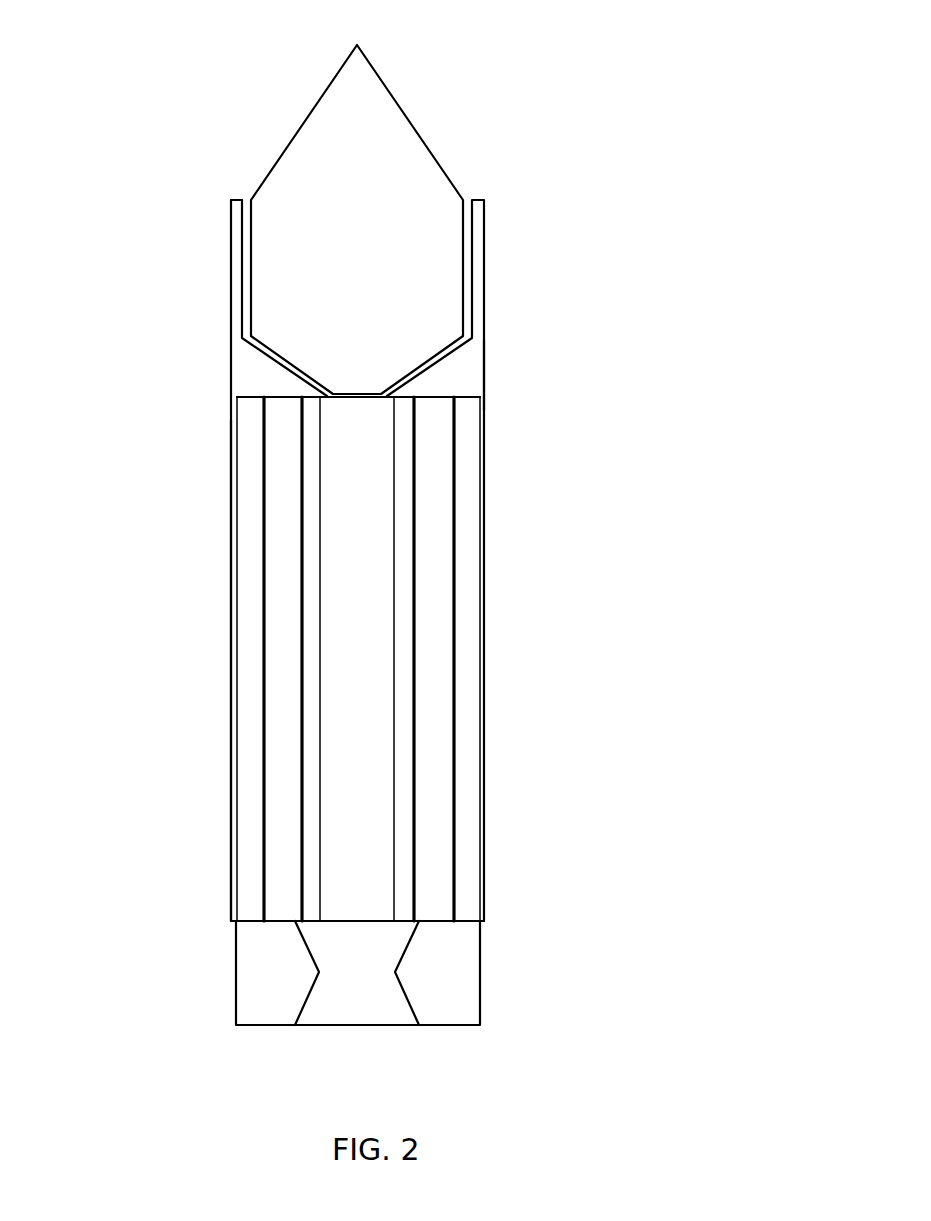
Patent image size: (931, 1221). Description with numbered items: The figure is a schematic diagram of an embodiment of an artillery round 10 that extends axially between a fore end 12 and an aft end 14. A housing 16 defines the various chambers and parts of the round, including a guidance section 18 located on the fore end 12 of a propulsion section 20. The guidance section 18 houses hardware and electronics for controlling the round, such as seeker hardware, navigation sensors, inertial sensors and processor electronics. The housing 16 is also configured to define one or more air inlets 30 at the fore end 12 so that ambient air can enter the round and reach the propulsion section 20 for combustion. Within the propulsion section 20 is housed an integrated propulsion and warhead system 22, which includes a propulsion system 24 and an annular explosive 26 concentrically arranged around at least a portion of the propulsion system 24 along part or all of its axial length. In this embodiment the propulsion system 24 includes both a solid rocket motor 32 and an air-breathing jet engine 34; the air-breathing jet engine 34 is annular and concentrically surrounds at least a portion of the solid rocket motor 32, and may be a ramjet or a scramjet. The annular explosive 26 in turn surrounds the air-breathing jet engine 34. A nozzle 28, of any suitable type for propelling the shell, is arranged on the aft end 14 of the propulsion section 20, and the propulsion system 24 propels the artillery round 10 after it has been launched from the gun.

The artillery round 10 is at (624, 223).
The fore end 12 is at (488, 145).
The aft end 14 is at (198, 992).
The housing 16 is at (478, 375).
The guidance section 18 is at (230, 282).
The propulsion section 20 is at (230, 513).
The integrated propulsion and warhead system 22 is at (695, 381).
The propulsion system 24 is at (582, 462).
The annular explosive 26 is at (470, 440).
The nozzle 28 is at (365, 1000).
The air inlet 30 is at (246, 197).
The solid rocket motor 32 is at (403, 602).
The air-breathing jet engine 34 is at (438, 530).